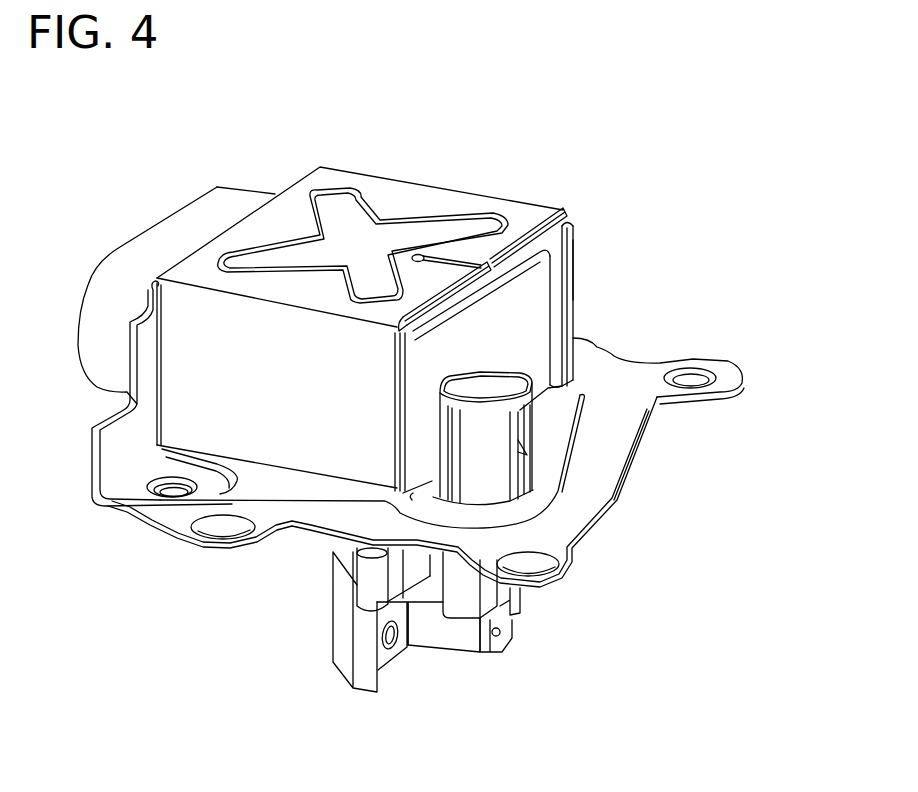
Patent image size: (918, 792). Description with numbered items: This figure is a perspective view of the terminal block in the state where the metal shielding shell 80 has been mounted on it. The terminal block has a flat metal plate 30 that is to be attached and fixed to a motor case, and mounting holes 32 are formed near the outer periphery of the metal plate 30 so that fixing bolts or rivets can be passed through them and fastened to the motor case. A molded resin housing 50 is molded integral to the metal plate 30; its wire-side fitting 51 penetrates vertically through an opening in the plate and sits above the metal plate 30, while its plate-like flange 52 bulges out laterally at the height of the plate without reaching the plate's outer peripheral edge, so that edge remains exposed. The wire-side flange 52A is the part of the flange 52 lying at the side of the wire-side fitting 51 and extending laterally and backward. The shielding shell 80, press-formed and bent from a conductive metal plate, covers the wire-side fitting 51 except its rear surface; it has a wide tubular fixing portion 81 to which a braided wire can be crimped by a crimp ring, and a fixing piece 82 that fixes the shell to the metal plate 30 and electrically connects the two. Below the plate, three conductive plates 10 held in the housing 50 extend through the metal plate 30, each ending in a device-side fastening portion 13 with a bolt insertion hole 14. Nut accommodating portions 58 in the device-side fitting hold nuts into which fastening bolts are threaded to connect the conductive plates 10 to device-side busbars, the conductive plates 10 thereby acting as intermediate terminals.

The conductive plate 10 is at (490, 665).
The device-side fastening portion 13 is at (383, 665).
The bolt insertion hole 14 is at (396, 648).
The metal plate 30 is at (618, 457).
The mounting hole 32 is at (690, 380).
The housing 50 is at (588, 256).
The wire-side fitting 51 is at (540, 324).
The flange 52 is at (558, 481).
The wire-side flange 52A is at (552, 476).
The nut accommodating portion 58 is at (340, 657).
The shielding shell 80 is at (419, 154).
The tubular fixing portion 81 is at (238, 203).
The fixing piece 82 is at (265, 485).